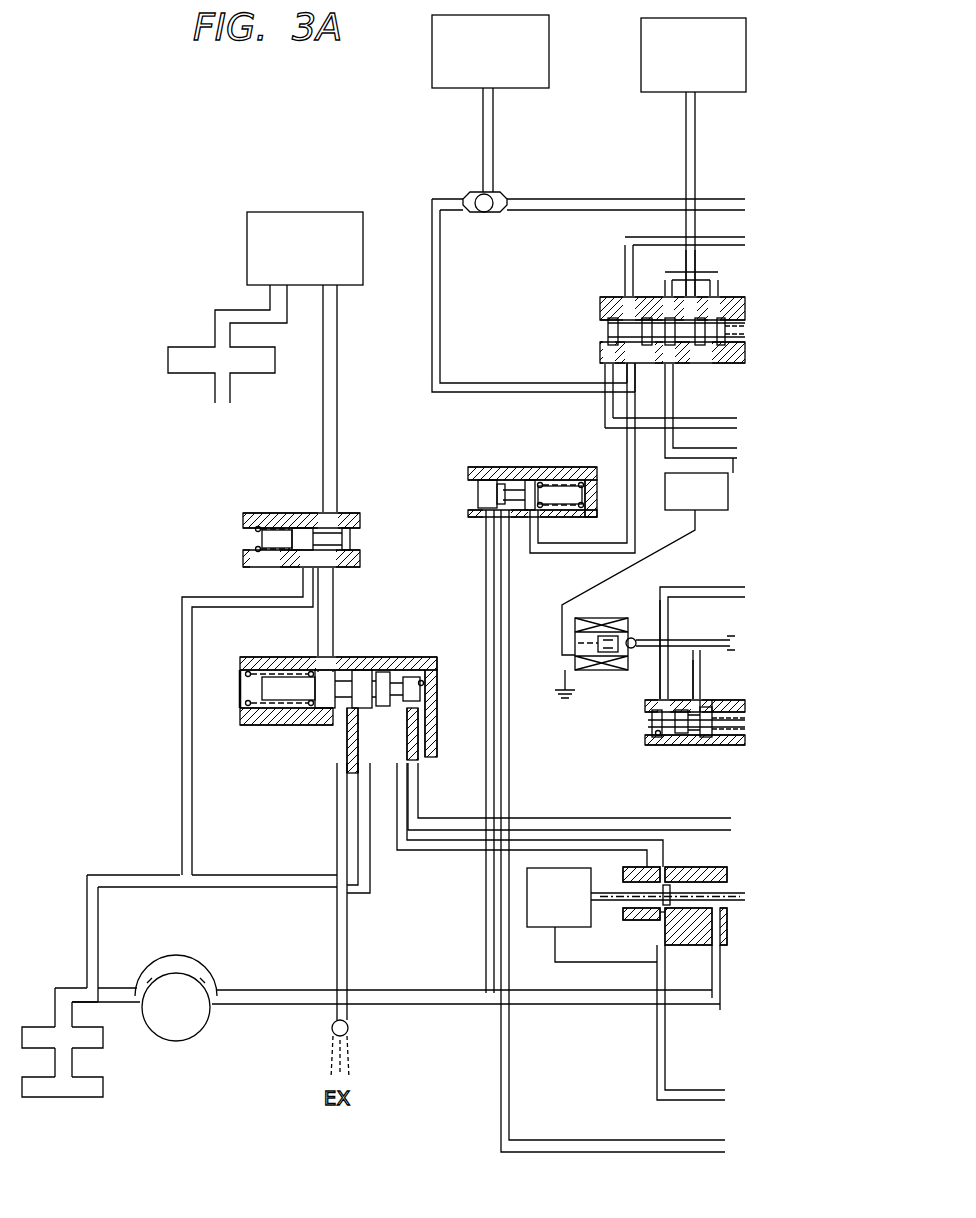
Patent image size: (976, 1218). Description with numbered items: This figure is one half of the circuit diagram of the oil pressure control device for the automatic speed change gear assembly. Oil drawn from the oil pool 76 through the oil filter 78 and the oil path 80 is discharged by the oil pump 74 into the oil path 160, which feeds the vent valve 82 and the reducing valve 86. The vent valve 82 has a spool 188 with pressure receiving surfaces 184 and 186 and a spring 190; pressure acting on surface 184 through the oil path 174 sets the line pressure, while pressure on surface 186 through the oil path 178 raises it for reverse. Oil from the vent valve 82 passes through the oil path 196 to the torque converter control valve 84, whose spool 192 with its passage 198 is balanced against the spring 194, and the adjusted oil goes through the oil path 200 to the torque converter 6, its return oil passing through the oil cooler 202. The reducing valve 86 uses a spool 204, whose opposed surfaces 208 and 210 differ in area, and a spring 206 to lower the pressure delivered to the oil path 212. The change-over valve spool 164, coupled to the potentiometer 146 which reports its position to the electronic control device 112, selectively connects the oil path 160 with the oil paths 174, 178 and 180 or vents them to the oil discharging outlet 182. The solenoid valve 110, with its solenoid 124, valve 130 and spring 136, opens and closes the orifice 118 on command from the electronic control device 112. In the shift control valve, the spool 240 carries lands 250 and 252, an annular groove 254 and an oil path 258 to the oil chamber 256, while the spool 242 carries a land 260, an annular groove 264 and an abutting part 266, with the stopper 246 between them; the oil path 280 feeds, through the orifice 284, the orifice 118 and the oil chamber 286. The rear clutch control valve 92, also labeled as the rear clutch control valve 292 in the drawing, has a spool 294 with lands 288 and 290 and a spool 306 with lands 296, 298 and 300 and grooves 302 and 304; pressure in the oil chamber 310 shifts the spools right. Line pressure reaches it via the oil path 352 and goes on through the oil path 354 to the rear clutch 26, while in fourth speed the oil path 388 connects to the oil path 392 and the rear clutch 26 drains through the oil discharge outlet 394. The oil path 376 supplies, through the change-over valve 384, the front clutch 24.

The torque converter 6 is at (305, 248).
The front clutch 24 is at (549, 57).
The rear clutch 26 is at (641, 57).
The oil pump 74 is at (172, 1040).
The oil pool 76 is at (38, 1100).
The oil filter 78 is at (40, 1030).
The oil path 80 is at (68, 988).
The vent valve 82 is at (341, 683).
The torque converter control valve 84 is at (310, 517).
The reducing valve 86 is at (506, 481).
The rear clutch control valve 92 is at (662, 326).
The solenoid valve 110 is at (572, 680).
The electronic control device 112 is at (696, 491).
The orifice 118 is at (637, 640).
The solenoid 124 is at (599, 672).
The valve 130 is at (605, 660).
The spring 136 is at (585, 672).
The potentiometer 146 is at (592, 915).
The oil path 160 is at (486, 586).
The spool 164 is at (697, 885).
The oil path 174 is at (605, 818).
The oil path 178 is at (440, 335).
The oil path 180 is at (657, 977).
The oil discharging outlet 182 is at (640, 918).
The pressure receiving surface 184 is at (420, 675).
The pressure receiving surface 186 is at (368, 672).
The spool 188 is at (328, 708).
The spring 190 is at (272, 676).
The spool 192 is at (295, 528).
The spring 194 is at (262, 528).
The oil path 196 is at (333, 590).
The passage 198 is at (350, 530).
The oil path 200 is at (323, 413).
The oil cooler 202 is at (190, 347).
The spool 204 is at (478, 503).
The spring 206 is at (562, 470).
The pressure receiving surface 208 is at (499, 478).
The pressure receiving surface 210 is at (530, 478).
The oil path 212 is at (501, 558).
The spool 240 is at (675, 724).
The spool 242 is at (725, 733).
The stopper 246 is at (706, 740).
The land 250 is at (656, 700).
The land 252 is at (681, 735).
The annular groove 254 is at (672, 640).
The oil chamber 256 is at (652, 722).
The oil path 258 is at (655, 735).
The land 260 is at (702, 700).
The annular groove 264 is at (714, 710).
The abutting part 266 is at (693, 733).
The oil path 280 is at (697, 650).
The orifice 284 is at (745, 592).
The oil chamber 286 is at (680, 700).
The land 288 is at (642, 320).
The land 290 is at (662, 300).
The rear clutch control valve 292 is at (608, 360).
The spool 294 is at (612, 318).
The land 296 is at (622, 392).
The land 298 is at (701, 410).
The land 300 is at (723, 348).
The annular groove 302 is at (612, 428).
The annular groove 304 is at (714, 300).
The spool 306 is at (692, 262).
The oil chamber 310 is at (665, 330).
The oil path 352 is at (733, 462).
The oil path 354 is at (686, 143).
The oil path 376 is at (592, 199).
The change-over valve 384 is at (500, 194).
The oil path 388 is at (695, 340).
The oil path 392 is at (625, 255).
The oil discharge outlet 394 is at (671, 411).